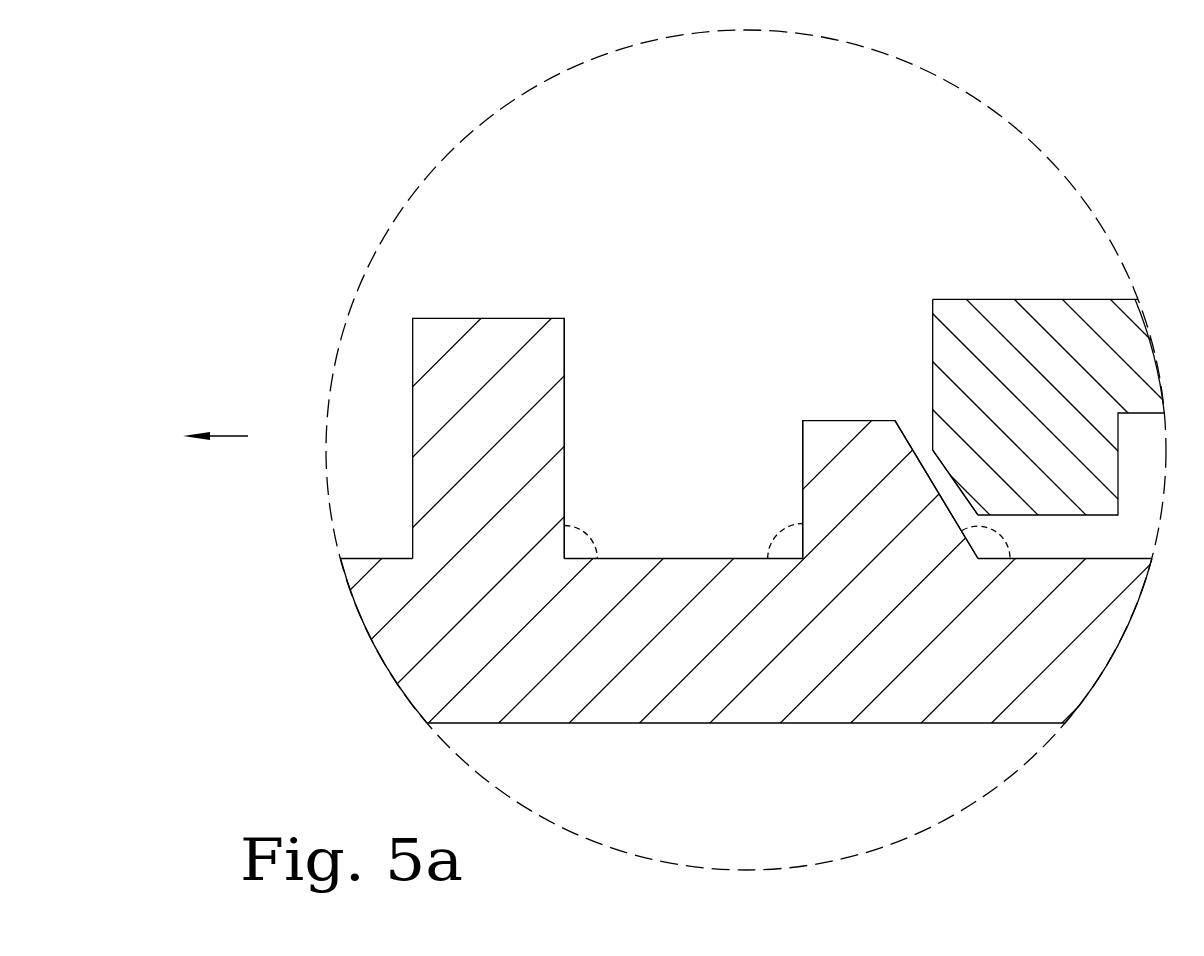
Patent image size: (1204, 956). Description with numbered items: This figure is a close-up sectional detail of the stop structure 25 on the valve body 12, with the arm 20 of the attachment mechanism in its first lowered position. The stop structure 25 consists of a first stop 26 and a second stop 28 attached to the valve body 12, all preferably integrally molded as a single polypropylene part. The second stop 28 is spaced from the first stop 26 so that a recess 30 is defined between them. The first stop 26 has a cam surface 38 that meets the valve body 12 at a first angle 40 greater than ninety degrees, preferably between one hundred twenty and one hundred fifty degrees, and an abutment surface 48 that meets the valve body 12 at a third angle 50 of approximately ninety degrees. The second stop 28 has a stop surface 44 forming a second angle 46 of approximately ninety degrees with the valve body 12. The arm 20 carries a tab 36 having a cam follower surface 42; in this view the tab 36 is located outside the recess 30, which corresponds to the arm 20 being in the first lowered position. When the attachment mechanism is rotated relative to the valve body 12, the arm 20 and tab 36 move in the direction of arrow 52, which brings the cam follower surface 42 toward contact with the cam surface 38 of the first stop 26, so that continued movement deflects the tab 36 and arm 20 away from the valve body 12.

The valve body 12 is at (699, 707).
The arm 20 is at (1138, 350).
The stop structure 25 is at (360, 126).
The first stop 26 is at (822, 430).
The second stop 28 is at (428, 324).
The recess 30 is at (680, 558).
The tab 36 is at (1003, 455).
The cam surface 38 is at (903, 424).
The first angle 40 is at (1003, 533).
The cam follower surface 42 is at (943, 467).
The stop surface 44 is at (565, 338).
The second angle 46 is at (592, 535).
The abutment surface 48 is at (803, 442).
The third angle 50 is at (773, 533).
The arrow 52 is at (224, 438).